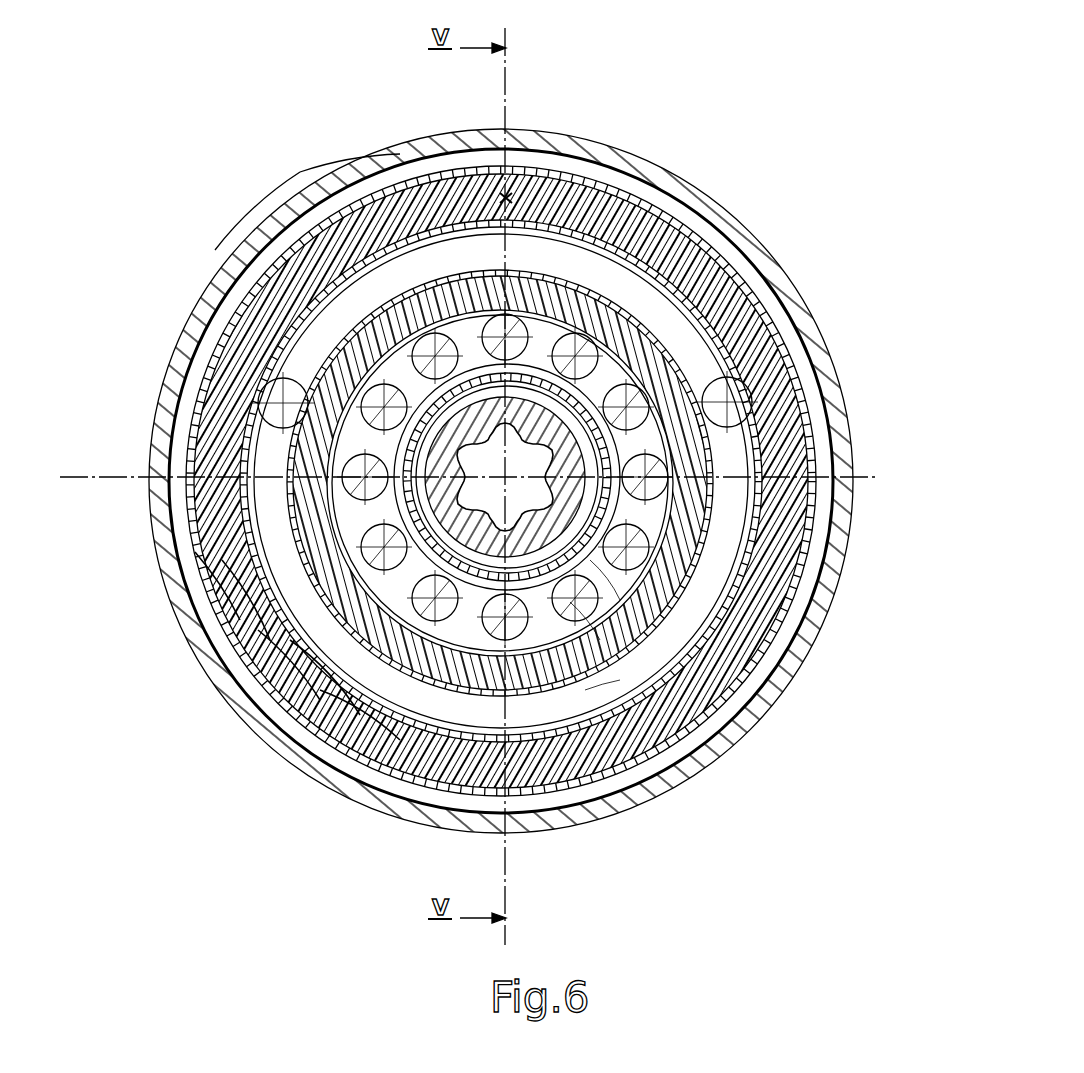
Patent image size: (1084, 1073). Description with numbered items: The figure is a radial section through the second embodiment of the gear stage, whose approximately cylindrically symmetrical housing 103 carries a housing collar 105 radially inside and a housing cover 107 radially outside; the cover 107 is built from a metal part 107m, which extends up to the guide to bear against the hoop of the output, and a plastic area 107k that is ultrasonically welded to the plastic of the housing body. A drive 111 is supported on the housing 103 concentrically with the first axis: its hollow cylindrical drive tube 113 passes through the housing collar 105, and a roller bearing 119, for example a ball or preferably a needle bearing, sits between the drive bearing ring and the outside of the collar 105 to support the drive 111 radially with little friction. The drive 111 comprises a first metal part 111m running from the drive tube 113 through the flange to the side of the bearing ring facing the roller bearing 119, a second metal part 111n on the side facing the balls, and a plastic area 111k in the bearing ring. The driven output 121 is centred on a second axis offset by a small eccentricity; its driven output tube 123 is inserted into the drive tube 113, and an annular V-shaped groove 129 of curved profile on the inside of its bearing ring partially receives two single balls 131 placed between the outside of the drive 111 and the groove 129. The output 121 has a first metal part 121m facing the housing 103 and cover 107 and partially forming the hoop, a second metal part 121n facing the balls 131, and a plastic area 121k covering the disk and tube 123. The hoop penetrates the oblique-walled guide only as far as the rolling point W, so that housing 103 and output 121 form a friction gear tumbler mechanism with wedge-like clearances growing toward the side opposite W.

The housing 103 is at (610, 136).
The housing collar 105 is at (452, 310).
The housing cover 107 is at (223, 263).
The plastic area 107k is at (263, 227).
The metal part 107m is at (332, 185).
The drive 111 is at (718, 457).
The plastic area 111k is at (570, 602).
The first metal part 111m is at (590, 560).
The second metal part 111n is at (585, 690).
The drive tube 113 is at (600, 500).
The roller bearing 119 is at (368, 486).
The driven output 121 is at (664, 198).
The plastic area 121k is at (225, 567).
The first metal part 121m is at (205, 554).
The second metal part 121n is at (260, 635).
The driven output tube 123 is at (355, 700).
The V-shaped groove 129 is at (330, 650).
The balls 131 is at (268, 398).
The rolling point W is at (507, 198).